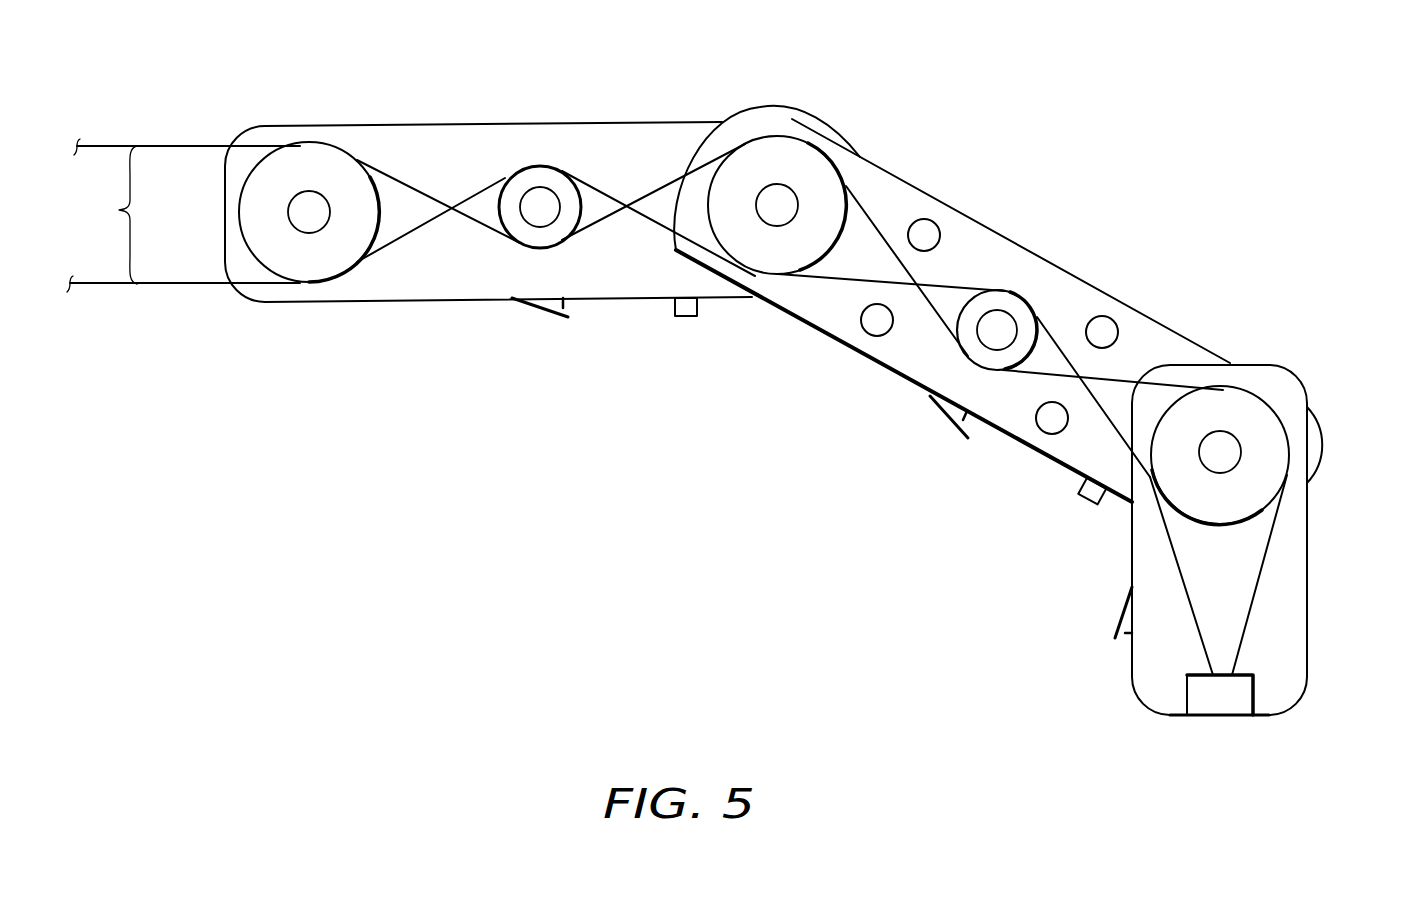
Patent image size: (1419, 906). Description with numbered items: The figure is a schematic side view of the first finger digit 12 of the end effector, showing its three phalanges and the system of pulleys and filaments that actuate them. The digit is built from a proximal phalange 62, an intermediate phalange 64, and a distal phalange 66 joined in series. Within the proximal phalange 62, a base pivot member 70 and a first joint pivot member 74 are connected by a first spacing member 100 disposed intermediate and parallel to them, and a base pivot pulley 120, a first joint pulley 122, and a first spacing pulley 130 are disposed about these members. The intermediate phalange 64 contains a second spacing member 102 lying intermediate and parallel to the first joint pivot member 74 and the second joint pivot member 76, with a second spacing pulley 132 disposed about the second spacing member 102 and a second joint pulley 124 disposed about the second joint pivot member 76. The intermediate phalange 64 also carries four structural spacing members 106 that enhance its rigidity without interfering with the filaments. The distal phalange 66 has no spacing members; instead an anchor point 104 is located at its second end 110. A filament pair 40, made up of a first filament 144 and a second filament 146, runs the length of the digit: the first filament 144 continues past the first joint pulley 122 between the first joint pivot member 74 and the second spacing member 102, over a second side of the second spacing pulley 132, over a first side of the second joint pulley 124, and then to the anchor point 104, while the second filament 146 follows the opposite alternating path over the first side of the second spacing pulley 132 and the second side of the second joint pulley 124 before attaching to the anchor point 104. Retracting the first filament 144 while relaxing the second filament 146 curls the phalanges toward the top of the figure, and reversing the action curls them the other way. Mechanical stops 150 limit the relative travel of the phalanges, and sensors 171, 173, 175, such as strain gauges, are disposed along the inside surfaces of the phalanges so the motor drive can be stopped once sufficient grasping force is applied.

The first finger digit 12 is at (1310, 622).
The filament pair 40 is at (183, 235).
The proximal phalange 62 is at (620, 133).
The intermediate phalange 64 is at (1165, 347).
The distal phalange 66 is at (1297, 570).
The base pivot member 70 is at (313, 200).
The first joint pivot member 74 is at (778, 200).
The second joint pivot member 76 is at (1230, 448).
The first spacing member 100 is at (535, 198).
The second spacing member 102 is at (1000, 325).
The anchor point 104 is at (1257, 692).
The structural spacing members 106 is at (877, 304).
The second end 110 is at (1172, 716).
The base pivot pulley 120 is at (318, 262).
The first joint pulley 122 is at (795, 263).
The second joint pulley 124 is at (1267, 484).
The first spacing pulley 130 is at (530, 232).
The second spacing pulley 132 is at (968, 342).
The first filament 144 is at (182, 146).
The second filament 146 is at (173, 286).
The mechanical stops 150 is at (683, 316).
The sensor 171 is at (565, 320).
The sensor 173 is at (950, 436).
The sensor 175 is at (1113, 630).